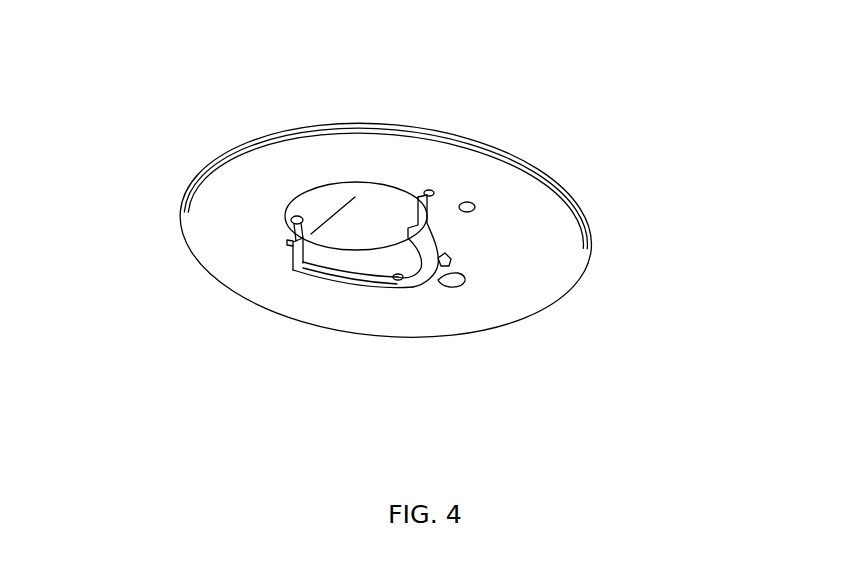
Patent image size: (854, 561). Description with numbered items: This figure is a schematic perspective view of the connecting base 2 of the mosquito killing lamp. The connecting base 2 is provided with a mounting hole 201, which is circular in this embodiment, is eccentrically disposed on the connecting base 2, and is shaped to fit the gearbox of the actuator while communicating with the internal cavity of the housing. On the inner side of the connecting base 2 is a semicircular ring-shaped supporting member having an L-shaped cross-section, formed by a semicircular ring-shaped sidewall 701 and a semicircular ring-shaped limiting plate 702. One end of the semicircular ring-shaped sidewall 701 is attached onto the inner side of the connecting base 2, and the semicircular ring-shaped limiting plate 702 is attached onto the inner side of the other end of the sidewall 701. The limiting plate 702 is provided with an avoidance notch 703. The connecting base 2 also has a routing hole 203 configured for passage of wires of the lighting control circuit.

The connecting base 2 is at (297, 152).
The mounting hole 201 is at (288, 227).
The routing hole 203 is at (465, 283).
The semicircular ring-shaped sidewall 701 is at (442, 233).
The semicircular ring-shaped limiting plate 702 is at (452, 263).
The avoidance notch 703 is at (400, 282).